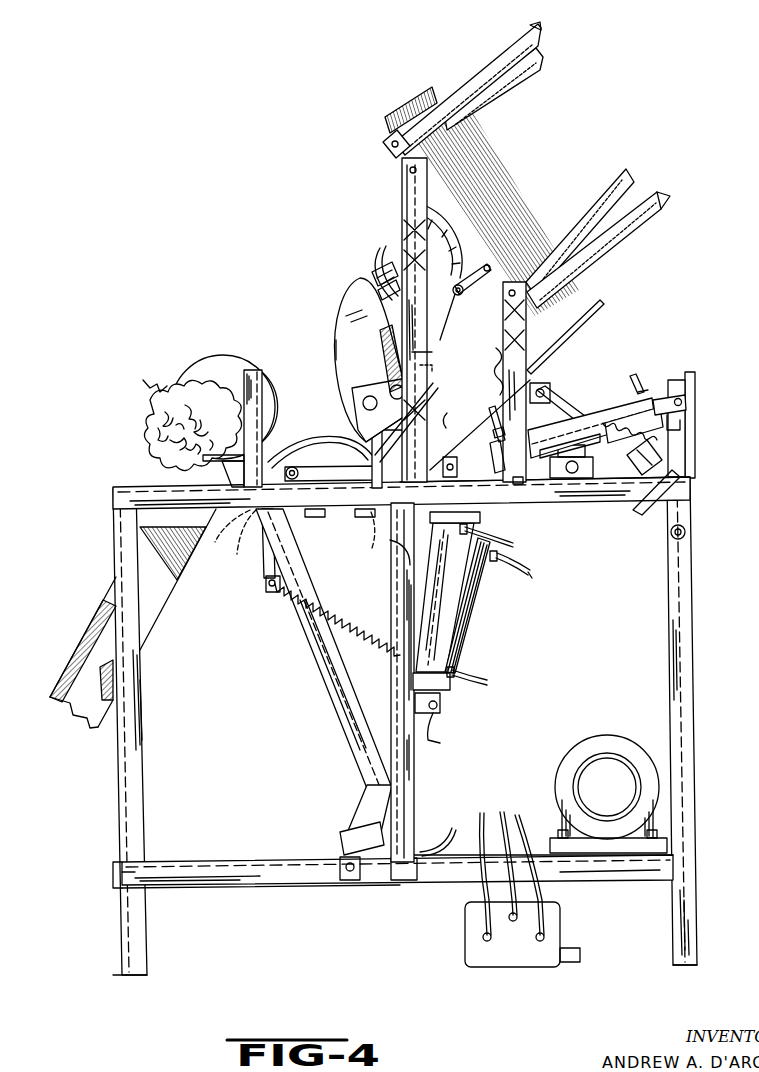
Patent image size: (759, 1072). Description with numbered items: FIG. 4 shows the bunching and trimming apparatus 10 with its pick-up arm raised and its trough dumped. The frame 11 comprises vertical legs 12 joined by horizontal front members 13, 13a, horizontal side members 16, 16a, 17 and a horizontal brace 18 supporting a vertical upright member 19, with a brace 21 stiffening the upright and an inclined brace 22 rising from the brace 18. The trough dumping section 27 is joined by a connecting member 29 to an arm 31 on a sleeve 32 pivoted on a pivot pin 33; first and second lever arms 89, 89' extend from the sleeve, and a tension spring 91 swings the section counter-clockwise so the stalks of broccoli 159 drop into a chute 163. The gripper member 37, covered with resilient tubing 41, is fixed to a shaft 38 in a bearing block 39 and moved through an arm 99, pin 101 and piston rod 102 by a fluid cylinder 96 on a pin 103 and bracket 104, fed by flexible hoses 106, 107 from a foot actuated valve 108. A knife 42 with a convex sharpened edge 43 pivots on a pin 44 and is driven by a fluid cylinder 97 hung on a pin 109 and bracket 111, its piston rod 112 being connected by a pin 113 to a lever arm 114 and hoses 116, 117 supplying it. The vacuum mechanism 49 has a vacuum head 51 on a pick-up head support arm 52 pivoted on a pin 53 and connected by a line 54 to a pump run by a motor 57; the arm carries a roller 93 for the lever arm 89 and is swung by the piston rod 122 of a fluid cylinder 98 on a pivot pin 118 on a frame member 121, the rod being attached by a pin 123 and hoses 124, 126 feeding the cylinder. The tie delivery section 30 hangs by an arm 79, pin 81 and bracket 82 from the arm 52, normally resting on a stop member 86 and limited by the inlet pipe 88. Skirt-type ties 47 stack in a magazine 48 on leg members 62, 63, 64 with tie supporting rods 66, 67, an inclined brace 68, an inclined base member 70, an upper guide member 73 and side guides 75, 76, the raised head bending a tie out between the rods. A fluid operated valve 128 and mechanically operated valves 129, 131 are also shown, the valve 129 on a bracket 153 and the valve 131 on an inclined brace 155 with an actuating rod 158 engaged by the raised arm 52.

The bunching and trimming apparatus 10 is at (93, 767).
The frame 11 is at (115, 802).
The vertical legs 12 is at (142, 716).
The horizontal front member 13 is at (190, 862).
The horizontal front member 13a is at (135, 490).
The horizontal side member 16 is at (700, 866).
The horizontal side member 16a is at (692, 492).
The horizontal side member 17 is at (118, 880).
The horizontal brace 18 is at (405, 880).
The vertical upright member 19 is at (414, 796).
The brace 21 is at (372, 540).
The inclined brace 22 is at (322, 680).
The trough dumping section 27 is at (232, 445).
The connecting member 29 is at (233, 463).
The tie delivery section 30 is at (378, 250).
The arm 31 is at (220, 470).
The sleeve 32 is at (225, 535).
The pivot pin 33 is at (240, 542).
The gripper member 37 is at (420, 352).
The shaft 38 is at (382, 440).
The bearing block 39 is at (378, 472).
The resilient tubing 41 is at (436, 369).
The knife 42 is at (345, 302).
The convex sharpened edge 43 is at (337, 342).
The pin 44 is at (425, 398).
The skirt-type ties 47 is at (405, 100).
The magazine 48 is at (492, 42).
The vacuum mechanism 49 is at (398, 240).
The vacuum head 51 is at (443, 213).
The pick-up head support arm 52 is at (540, 360).
The pin 53 is at (684, 538).
The line 54 is at (380, 338).
The motor 57 is at (605, 760).
The leg member 62 is at (400, 186).
The leg member 63 is at (553, 337).
The leg member 64 is at (486, 368).
The tie supporting rod 66 is at (402, 162).
The tie supporting rod 67 is at (560, 286).
The inclined brace 68 is at (455, 210).
The inclined base member 70 is at (630, 234).
The upper guide member 73 is at (548, 30).
The side guide 75 is at (546, 62).
The side guide 76 is at (606, 190).
The arm 79 is at (445, 287).
The pin 81 is at (496, 300).
The bracket 82 is at (480, 292).
The stop member 86 is at (315, 510).
The inlet pipe 88 is at (383, 286).
The first lever arm 89 is at (320, 434).
The second lever arm 89' is at (242, 596).
The tension spring 91 is at (345, 622).
The roller 93 is at (452, 300).
The fluid cylinder 96 is at (603, 406).
The fluid cylinder 97 is at (455, 645).
The fluid cylinder 98 is at (470, 608).
The arm 99 is at (378, 460).
The pin 101 is at (365, 510).
The piston rod 102 is at (515, 486).
The pin 103 is at (680, 404).
The bracket 104 is at (678, 380).
The flexible hose 106 is at (497, 415).
The flexible hose 107 is at (638, 378).
The foot actuated valve 108 is at (500, 965).
The pin 109 is at (440, 708).
The bracket 111 is at (448, 733).
The piston rod 112 is at (403, 556).
The pin 113 is at (446, 458).
The lever arm 114 is at (446, 420).
The hose 116 is at (530, 560).
The hose 117 is at (492, 688).
The pivot pin 118 is at (333, 862).
The frame member 121 is at (245, 890).
The piston rod 122 is at (515, 545).
The pin 123 is at (562, 400).
The flexible hose 124 is at (515, 575).
The flexible hose 126 is at (430, 842).
The fluid operated valve 128 is at (675, 440).
The mechanically operated valve 129 is at (490, 462).
The mechanically operated valve 131 is at (652, 455).
The bracket 153 is at (490, 516).
The inclined brace 155 is at (648, 498).
The actuating rod 158 is at (636, 468).
The stalks of broccoli 159 is at (150, 430).
The chute 163 is at (82, 638).